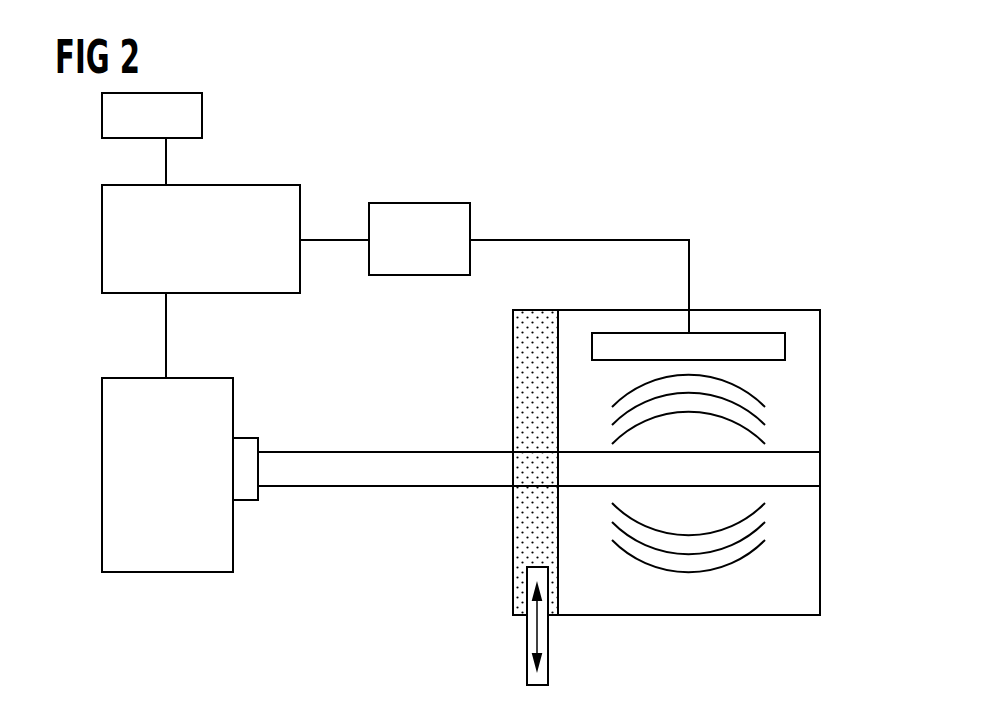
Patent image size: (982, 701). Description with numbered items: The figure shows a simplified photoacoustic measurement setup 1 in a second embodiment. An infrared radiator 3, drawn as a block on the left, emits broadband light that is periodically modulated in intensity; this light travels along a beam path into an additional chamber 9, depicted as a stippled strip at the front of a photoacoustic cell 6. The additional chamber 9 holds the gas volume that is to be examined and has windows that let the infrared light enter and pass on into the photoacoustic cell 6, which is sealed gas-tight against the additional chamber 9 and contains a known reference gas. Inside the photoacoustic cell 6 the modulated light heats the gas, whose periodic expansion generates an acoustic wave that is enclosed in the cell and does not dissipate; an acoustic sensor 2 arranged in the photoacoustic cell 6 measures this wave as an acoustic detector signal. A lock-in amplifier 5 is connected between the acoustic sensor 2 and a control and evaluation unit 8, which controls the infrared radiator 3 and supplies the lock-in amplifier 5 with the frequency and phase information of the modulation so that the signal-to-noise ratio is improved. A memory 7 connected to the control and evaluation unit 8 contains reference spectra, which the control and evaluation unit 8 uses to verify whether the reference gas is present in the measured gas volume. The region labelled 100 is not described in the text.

The photoacoustic measurement setup 1 is at (660, 125).
The acoustic sensor 2 is at (726, 333).
The infrared radiator 3 is at (102, 473).
The lock-in amplifier 5 is at (420, 203).
The photoacoustic cell 6 is at (800, 310).
The memory 7 is at (102, 117).
The control and evaluation unit 8 is at (102, 232).
The additional chamber 9 is at (513, 519).
The acoustic window 100 is at (525, 362).